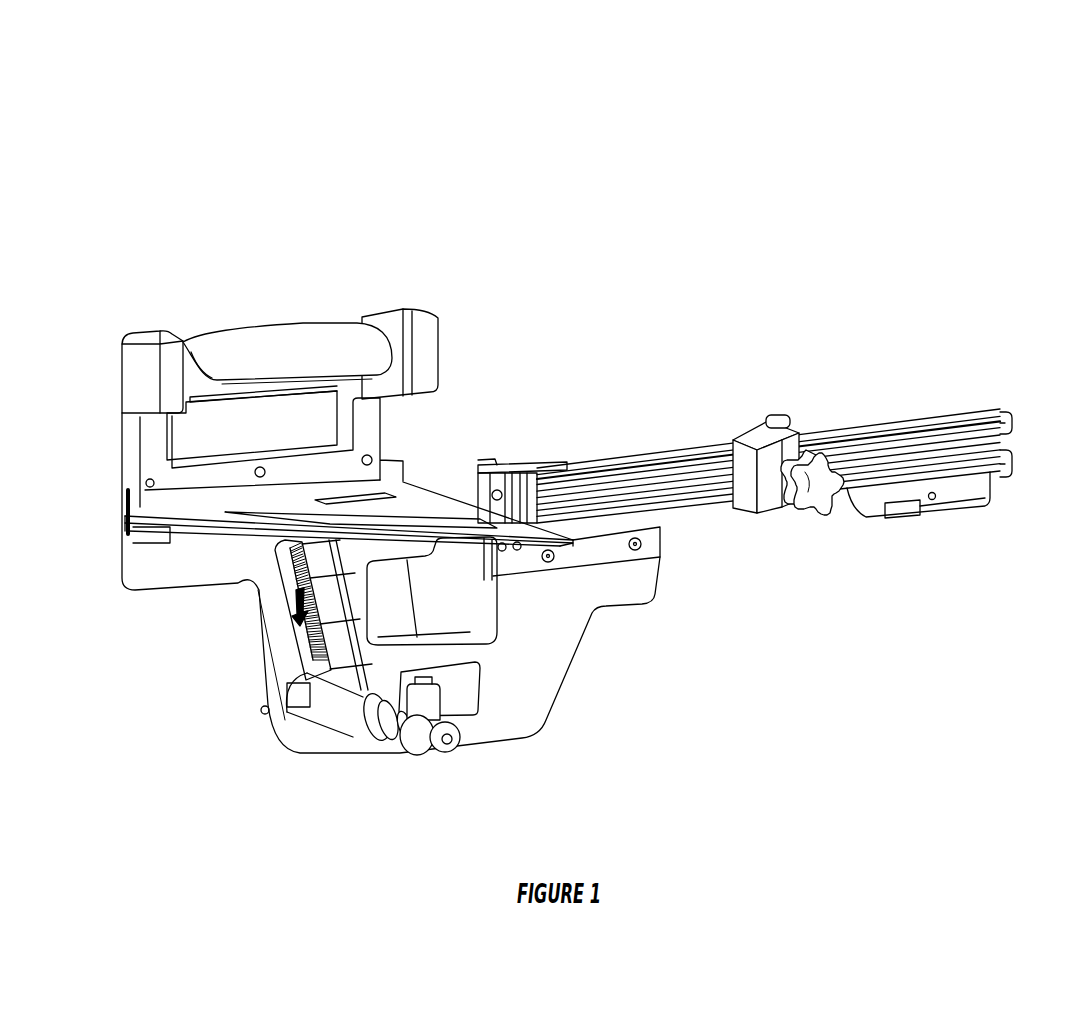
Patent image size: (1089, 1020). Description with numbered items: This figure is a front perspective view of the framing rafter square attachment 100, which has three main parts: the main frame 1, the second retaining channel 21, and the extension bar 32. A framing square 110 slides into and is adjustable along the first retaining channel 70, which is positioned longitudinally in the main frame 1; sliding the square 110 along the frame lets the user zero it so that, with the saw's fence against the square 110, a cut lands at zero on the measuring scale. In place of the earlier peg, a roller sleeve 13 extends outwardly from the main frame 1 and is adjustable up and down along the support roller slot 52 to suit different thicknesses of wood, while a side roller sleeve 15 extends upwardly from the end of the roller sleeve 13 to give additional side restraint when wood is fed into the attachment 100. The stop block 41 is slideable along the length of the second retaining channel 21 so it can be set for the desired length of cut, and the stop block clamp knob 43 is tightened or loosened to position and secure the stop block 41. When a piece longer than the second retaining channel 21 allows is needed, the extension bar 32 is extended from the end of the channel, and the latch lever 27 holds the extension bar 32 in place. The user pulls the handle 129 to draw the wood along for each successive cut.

The framing rafter square attachment 100 is at (957, 95).
The main frame 1 is at (548, 658).
The framing square 110 is at (432, 500).
The handle 129 is at (287, 341).
The first retaining channel 70 is at (125, 531).
The support roller slot 52 is at (292, 612).
The roller sleeve 13 is at (269, 723).
The side roller sleeve 15 is at (448, 742).
The second retaining channel 21 is at (707, 520).
The extension bar 32 is at (953, 440).
The stop block 41 is at (767, 493).
The stop block clamp knob 43 is at (827, 490).
The latch lever 27 is at (907, 508).